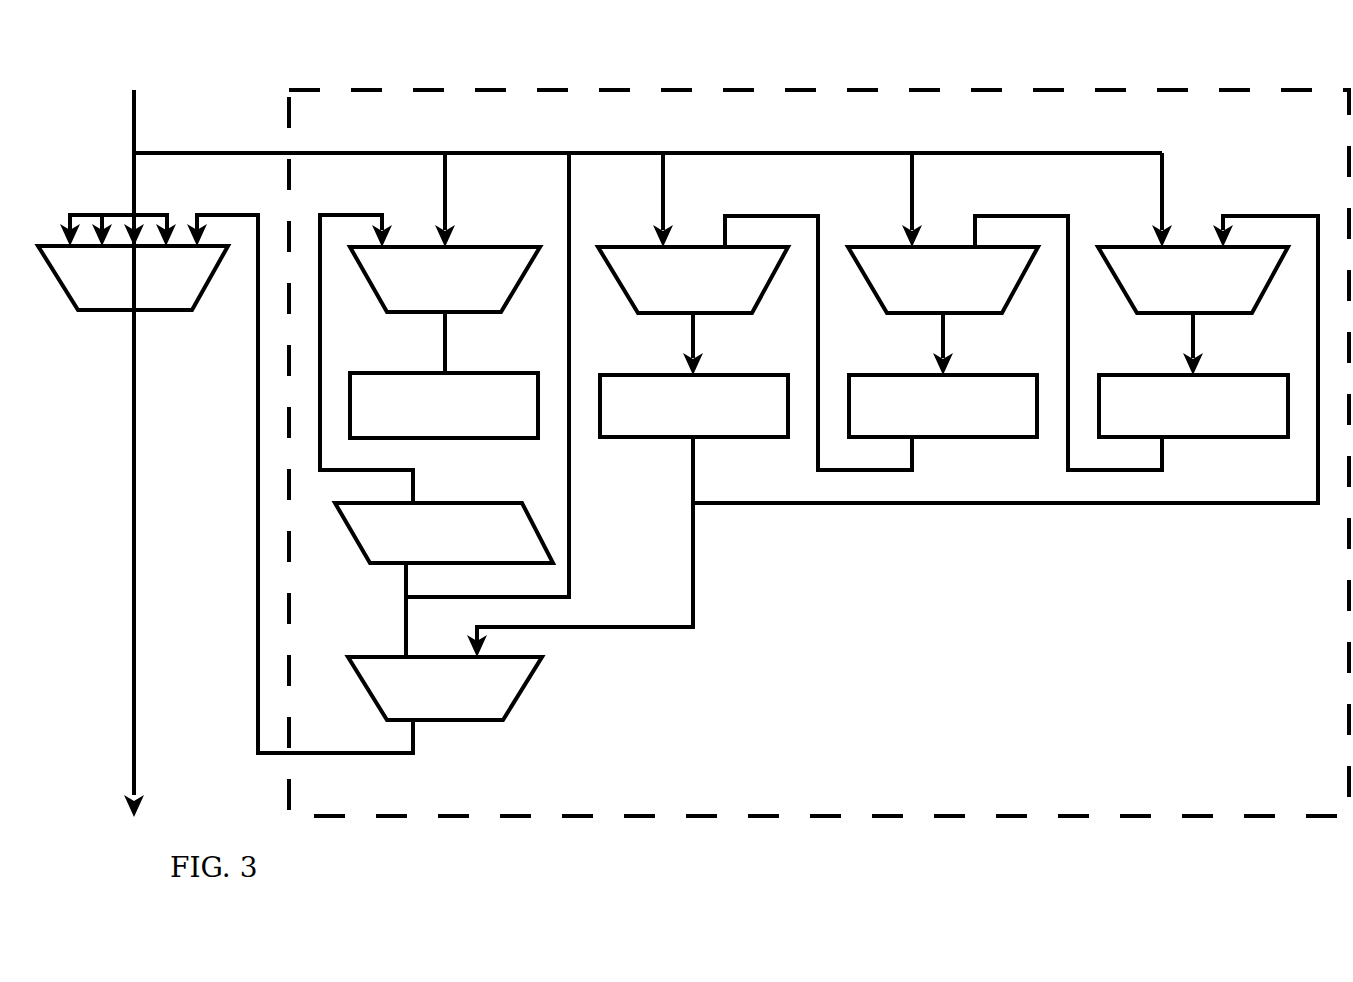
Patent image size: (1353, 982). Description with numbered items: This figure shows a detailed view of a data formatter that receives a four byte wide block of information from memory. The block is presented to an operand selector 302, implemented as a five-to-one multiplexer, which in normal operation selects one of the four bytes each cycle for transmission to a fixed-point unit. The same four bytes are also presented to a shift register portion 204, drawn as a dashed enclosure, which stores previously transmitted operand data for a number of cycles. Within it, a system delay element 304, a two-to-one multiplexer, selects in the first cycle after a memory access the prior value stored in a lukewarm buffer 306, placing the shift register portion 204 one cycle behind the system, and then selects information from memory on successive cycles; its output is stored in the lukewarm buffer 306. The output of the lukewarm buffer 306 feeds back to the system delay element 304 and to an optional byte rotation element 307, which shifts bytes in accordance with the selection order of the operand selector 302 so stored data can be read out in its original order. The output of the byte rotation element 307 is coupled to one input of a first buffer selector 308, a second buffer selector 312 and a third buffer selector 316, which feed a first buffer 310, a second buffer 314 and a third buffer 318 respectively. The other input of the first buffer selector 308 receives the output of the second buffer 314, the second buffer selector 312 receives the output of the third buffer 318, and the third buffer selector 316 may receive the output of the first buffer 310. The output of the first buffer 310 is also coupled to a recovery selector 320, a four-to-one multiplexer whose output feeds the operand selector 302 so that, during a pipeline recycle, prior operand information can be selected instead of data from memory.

The shift register portion 204 is at (815, 89).
The operand selector 302 is at (95, 312).
The system delay element 304 is at (470, 247).
The lukewarm buffer 306 is at (473, 373).
The byte rotation element 307 is at (470, 503).
The first buffer selector 308 is at (633, 247).
The buffer 1 310 is at (650, 375).
The second buffer selector 312 is at (933, 247).
The buffer 2 314 is at (955, 375).
The third buffer selector 316 is at (1185, 247).
The buffer 3 318 is at (1250, 437).
The recovery selector 320 is at (513, 700).